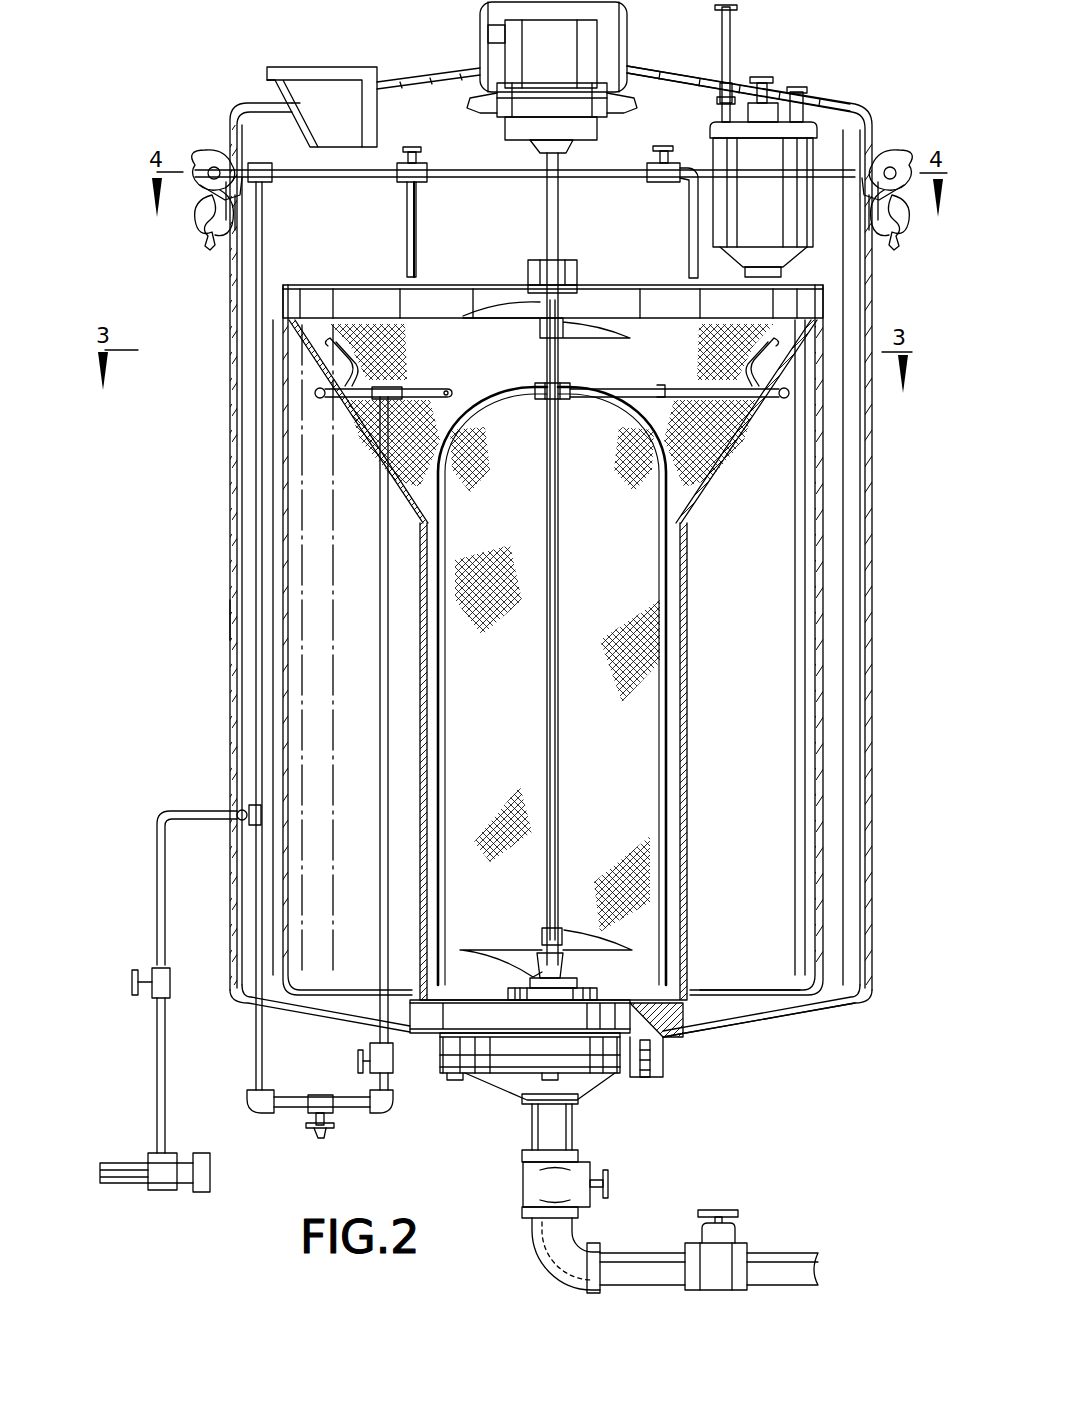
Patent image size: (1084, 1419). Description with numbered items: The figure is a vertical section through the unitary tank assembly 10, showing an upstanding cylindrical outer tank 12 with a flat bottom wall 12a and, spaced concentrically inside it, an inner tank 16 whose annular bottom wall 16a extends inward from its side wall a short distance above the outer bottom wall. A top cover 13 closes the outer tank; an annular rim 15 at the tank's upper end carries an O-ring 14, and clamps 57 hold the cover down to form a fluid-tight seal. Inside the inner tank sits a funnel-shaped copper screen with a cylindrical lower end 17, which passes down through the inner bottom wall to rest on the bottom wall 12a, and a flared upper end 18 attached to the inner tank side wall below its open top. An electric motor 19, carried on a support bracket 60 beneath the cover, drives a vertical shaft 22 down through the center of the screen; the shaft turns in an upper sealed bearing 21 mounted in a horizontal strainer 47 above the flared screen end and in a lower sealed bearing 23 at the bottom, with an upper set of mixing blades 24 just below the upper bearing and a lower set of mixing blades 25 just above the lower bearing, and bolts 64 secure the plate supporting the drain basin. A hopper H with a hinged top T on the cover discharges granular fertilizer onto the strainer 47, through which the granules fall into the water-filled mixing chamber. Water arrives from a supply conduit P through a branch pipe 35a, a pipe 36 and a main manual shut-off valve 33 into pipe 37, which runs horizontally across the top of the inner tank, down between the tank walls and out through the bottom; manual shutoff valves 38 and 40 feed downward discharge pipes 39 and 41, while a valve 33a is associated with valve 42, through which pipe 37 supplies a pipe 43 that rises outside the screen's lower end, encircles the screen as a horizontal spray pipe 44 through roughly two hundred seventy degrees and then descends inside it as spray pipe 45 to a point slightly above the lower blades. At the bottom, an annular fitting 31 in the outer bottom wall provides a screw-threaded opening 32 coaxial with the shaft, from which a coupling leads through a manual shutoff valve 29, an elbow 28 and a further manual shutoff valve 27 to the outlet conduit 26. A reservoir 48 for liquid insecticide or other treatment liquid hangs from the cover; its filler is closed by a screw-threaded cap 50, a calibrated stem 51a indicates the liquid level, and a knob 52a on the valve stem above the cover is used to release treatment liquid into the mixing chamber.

The unitary tank assembly 10 is at (232, 505).
The outer tank 12 is at (876, 611).
The bottom wall of outer tank 12a is at (812, 1015).
The top cover 13 is at (420, 72).
The O-ring 14 is at (206, 160).
The annular rim 15 is at (219, 205).
The inner tank 16 is at (832, 585).
The bottom wall of inner tank 16a is at (732, 993).
The cylindrical lower end of screen 17 is at (502, 754).
The flared upper end of screen 18 is at (376, 440).
The electric motor 19 is at (566, 56).
The upper sealed bearing 21 is at (578, 276).
The vertical shaft 22 is at (560, 778).
The lower sealed bearing 23 is at (578, 983).
The upper set of mixing blades 24 is at (590, 320).
The lower set of mixing blades 25 is at (512, 950).
The outlet conduit 26 is at (785, 1252).
The manual shutoff valve 27 is at (718, 1210).
The elbow 28 is at (545, 1266).
The manual shutoff valve 29 is at (612, 1184).
The annular fitting 31 is at (532, 1118).
The screw-threaded opening 32 is at (582, 1098).
The manual shut-off valve 33 is at (130, 982).
The manual shutoff valve 33a is at (312, 1130).
The branch pipe 35a is at (160, 1192).
The pipe 36 is at (238, 813).
The water supply pipe 37 is at (326, 178).
The manual shutoff valve 38 is at (412, 152).
The discharge pipe 39 is at (407, 235).
The manual shutoff valve 40 is at (668, 145).
The discharge pipe 41 is at (690, 215).
The manual shutoff valve 42 is at (360, 1062).
The pipe 43 is at (385, 760).
The horizontal spray pipe 44 is at (432, 380).
The spray pipe 45 is at (372, 348).
The strainer 47 is at (415, 343).
The reservoir 48 is at (810, 200).
The screw-threaded cap 50 is at (804, 92).
The calibrated stem 51a is at (722, 35).
The knob 52a is at (768, 80).
The clamps 57 is at (186, 210).
The support bracket 60 is at (497, 106).
The bolts 64 is at (462, 1078).
The hopper H is at (302, 66).
The hinged top T is at (332, 70).
The supply conduit P is at (122, 1165).